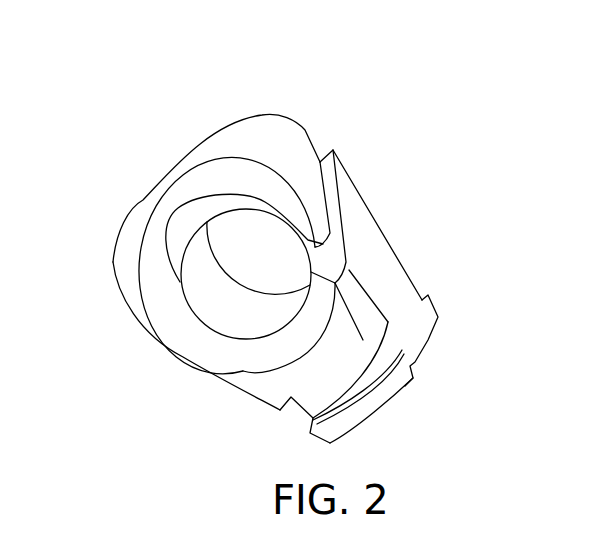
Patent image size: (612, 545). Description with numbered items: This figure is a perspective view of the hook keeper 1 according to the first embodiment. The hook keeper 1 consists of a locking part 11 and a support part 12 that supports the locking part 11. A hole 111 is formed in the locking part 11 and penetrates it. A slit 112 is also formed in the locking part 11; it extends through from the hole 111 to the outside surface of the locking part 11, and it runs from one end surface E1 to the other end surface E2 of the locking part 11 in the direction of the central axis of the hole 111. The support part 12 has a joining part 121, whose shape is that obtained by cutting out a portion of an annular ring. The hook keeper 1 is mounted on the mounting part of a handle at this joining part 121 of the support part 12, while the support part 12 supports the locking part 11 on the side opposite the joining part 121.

The hook keeper 1 is at (271, 85).
The locking part 11 is at (125, 268).
The hole 111 is at (213, 285).
The slit 112 is at (350, 215).
The support part 12 is at (377, 340).
The joining part 121 is at (378, 386).
The one end surface E1 is at (256, 350).
The other end surface E2 is at (325, 127).